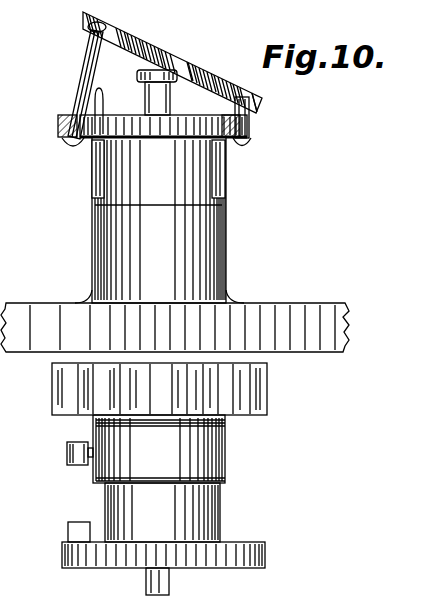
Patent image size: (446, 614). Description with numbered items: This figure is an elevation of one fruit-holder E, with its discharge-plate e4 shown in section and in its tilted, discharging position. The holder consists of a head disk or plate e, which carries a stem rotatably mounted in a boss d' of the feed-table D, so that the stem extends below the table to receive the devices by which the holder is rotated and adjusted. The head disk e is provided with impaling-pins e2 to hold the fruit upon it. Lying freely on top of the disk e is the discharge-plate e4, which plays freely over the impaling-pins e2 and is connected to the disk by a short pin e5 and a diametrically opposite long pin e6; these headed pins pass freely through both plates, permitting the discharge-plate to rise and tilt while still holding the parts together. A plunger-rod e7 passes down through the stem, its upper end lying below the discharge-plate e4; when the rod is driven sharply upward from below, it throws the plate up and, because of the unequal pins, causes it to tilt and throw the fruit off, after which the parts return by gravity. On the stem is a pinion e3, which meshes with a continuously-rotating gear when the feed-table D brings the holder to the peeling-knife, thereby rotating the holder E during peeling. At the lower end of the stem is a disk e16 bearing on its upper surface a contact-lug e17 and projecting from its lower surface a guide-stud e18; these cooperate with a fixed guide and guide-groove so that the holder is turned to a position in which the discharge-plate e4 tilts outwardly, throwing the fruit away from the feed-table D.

The head disk or plate e is at (58, 120).
The impaling-pins e2 is at (97, 153).
The pinion e3 is at (250, 393).
The discharge-plate e4 is at (202, 58).
The short pin e5 is at (253, 142).
The long pin e6 is at (86, 67).
The plunger-rod e7 is at (170, 100).
The disk e16 is at (265, 552).
The contact-lug e17 is at (68, 523).
The guide-stud e18 is at (171, 593).
The boss d' is at (169, 220).
The feed-table D is at (318, 292).
The fruit-holder E is at (297, 163).